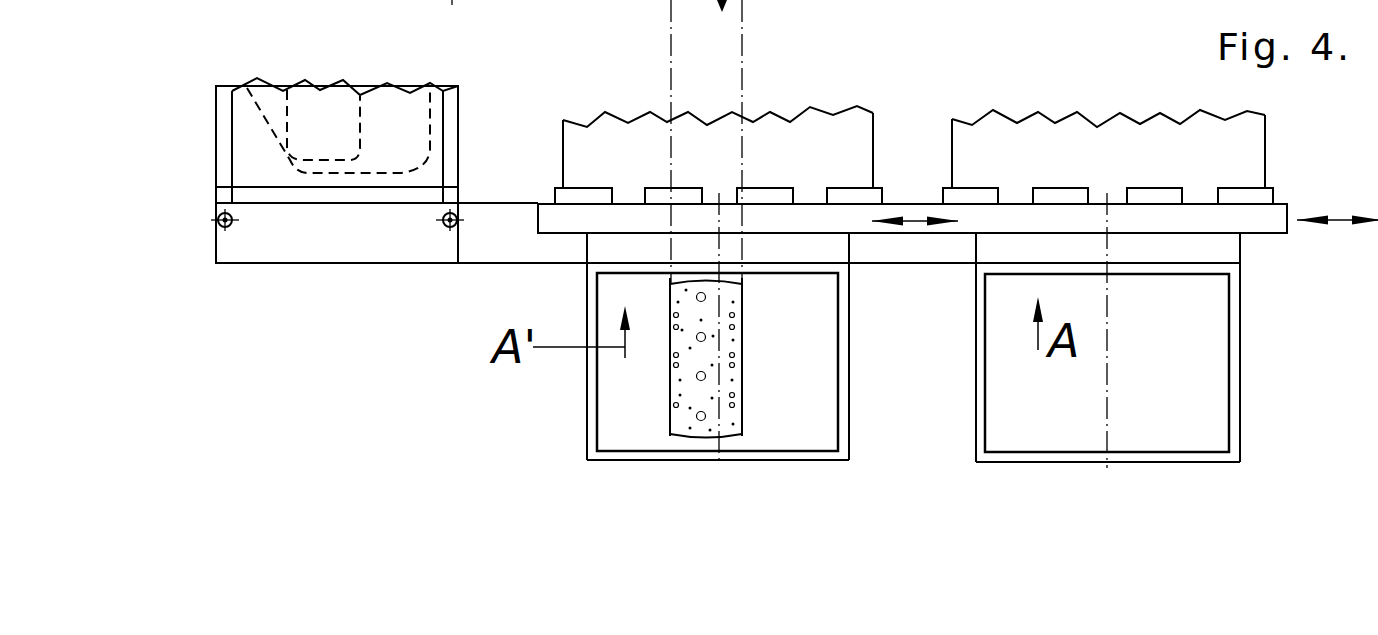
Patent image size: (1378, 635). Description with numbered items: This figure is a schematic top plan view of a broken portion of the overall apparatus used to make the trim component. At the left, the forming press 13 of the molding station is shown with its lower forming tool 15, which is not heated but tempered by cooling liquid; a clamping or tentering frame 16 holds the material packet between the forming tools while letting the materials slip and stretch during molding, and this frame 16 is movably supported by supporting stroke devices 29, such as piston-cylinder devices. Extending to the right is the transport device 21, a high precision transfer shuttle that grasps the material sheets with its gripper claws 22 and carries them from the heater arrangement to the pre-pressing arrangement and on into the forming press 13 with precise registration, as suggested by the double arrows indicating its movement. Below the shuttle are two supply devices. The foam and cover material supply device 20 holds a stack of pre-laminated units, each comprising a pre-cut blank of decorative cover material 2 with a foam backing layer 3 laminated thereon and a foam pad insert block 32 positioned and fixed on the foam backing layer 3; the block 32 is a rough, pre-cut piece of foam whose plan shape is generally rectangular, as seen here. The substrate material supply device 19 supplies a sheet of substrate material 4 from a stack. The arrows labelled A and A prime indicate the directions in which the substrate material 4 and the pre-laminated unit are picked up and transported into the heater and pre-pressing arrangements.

The cover material 2 is at (760, 362).
The foam backing layer 3 is at (813, 353).
The substrate material 4 is at (1173, 413).
The forming press 13 is at (308, 5).
The lower forming tool 15 is at (375, 0).
The clamping or tentering frame 16 is at (222, 152).
The substrate material supply device 19 is at (976, 387).
The foam and cover material supply device 20 is at (588, 443).
The transport device 21 is at (1245, 218).
The gripper claws 22 is at (1158, 198).
The supporting stroke devices 29 is at (217, 224).
The foam pad insert block 32 is at (700, 390).